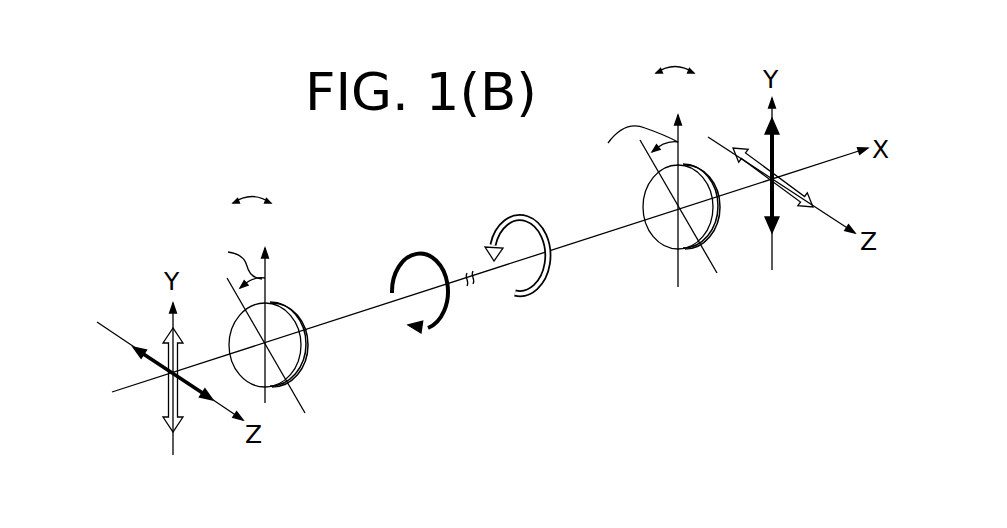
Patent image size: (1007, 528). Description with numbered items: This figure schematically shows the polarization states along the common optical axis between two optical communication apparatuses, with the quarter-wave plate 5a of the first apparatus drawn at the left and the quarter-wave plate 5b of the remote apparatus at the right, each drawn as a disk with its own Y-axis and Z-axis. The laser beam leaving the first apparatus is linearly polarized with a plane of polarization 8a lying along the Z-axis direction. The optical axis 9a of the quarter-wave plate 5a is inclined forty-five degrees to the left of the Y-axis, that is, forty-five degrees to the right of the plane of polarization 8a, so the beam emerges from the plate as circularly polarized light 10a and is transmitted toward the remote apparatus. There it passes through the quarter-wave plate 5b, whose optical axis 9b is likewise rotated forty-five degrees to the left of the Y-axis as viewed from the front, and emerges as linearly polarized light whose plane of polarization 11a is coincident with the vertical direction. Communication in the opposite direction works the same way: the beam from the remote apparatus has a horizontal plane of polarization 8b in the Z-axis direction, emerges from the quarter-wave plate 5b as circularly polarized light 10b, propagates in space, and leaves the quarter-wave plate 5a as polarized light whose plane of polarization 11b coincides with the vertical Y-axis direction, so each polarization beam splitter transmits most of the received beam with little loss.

The quarter-wave plate 5a is at (288, 303).
The quarter-wave plate 5b is at (643, 193).
The plane of polarization 8a is at (134, 346).
The plane of polarization 8b is at (815, 193).
The optical axis 9a is at (298, 399).
The optical axis 9b is at (715, 260).
The circularly polarized light 10a is at (432, 337).
The circularly polarized light 10b is at (549, 293).
The plane of polarization 11a is at (778, 128).
The plane of polarization 11b is at (167, 417).